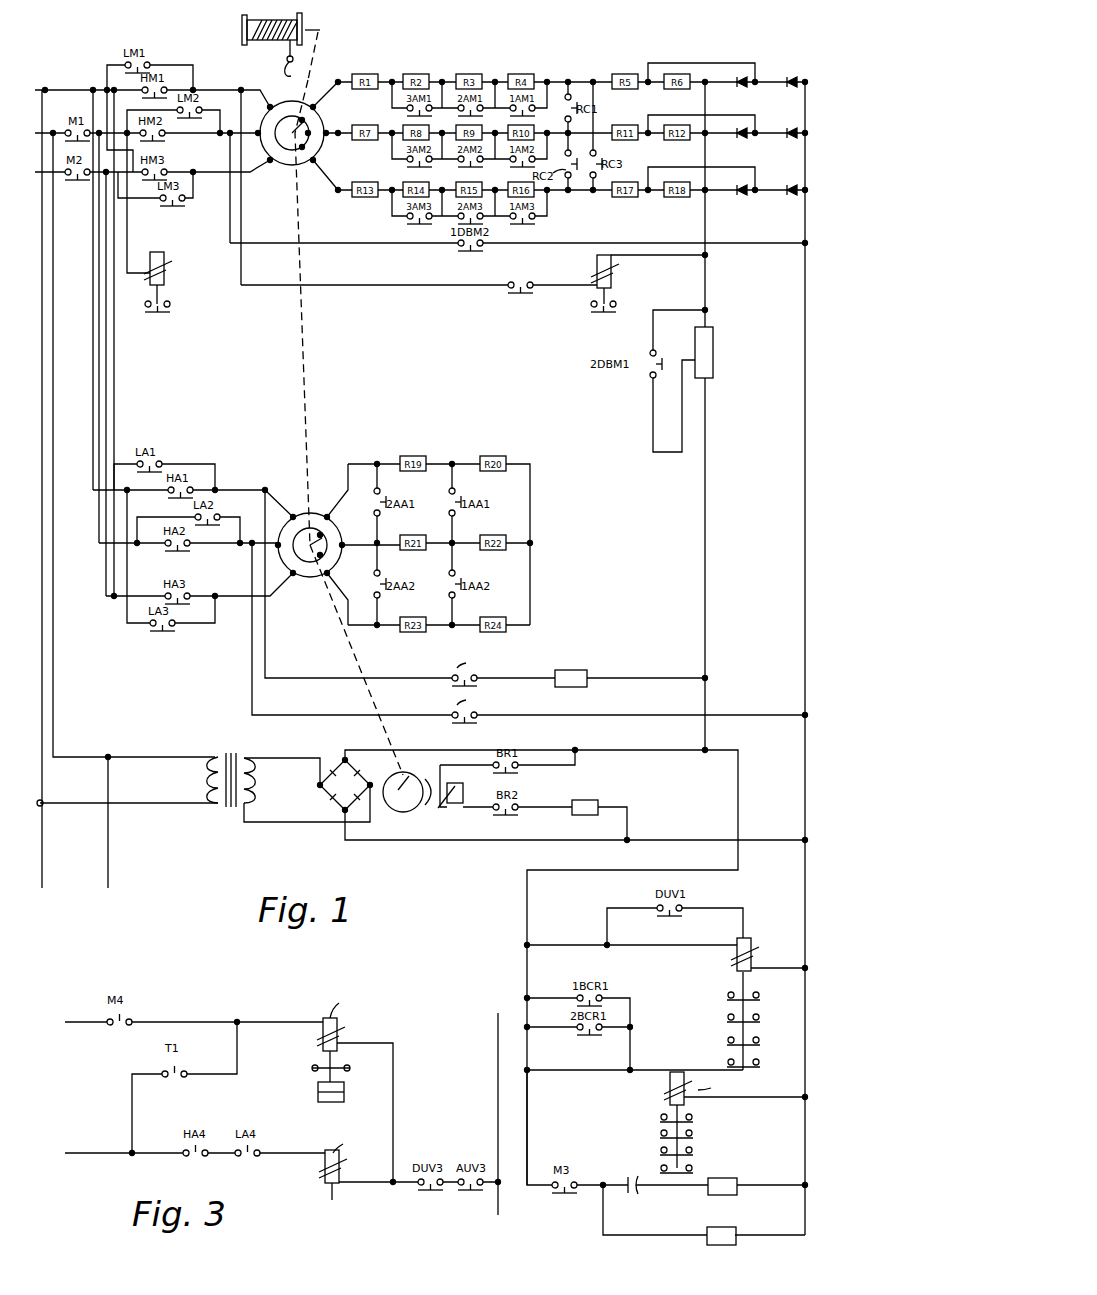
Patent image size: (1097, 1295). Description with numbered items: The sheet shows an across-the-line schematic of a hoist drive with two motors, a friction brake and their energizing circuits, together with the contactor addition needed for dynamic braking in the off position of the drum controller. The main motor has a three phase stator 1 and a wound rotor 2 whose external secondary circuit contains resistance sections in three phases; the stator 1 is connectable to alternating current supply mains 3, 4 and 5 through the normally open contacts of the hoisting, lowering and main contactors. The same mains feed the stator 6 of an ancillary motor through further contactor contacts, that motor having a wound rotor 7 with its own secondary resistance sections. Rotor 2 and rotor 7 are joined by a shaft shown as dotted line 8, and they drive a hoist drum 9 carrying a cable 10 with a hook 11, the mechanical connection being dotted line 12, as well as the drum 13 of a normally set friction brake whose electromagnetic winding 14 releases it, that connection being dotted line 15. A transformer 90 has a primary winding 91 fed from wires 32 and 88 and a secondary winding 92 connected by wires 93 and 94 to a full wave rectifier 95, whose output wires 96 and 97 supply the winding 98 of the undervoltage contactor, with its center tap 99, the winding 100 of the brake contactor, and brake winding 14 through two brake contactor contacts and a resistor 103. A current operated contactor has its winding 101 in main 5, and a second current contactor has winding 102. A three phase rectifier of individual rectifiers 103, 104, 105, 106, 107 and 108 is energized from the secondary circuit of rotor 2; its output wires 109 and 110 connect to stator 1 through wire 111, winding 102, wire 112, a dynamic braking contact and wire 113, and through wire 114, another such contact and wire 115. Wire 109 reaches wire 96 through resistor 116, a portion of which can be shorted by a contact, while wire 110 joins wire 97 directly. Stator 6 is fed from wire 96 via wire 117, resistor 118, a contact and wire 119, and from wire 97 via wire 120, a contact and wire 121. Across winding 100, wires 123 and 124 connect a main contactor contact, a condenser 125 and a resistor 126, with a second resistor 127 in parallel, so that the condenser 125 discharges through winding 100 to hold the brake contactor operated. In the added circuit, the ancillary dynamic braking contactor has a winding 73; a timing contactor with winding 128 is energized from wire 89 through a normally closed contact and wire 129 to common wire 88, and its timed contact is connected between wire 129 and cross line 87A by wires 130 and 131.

In FIG. 1, the three phase stator 1 is at (275, 165).
In FIG. 1, the wound rotor 2 is at (308, 122).
In FIG. 1, the alternating current supply main 3 is at (64, 92).
In FIG. 1, the alternating current supply main 4 is at (45, 136).
In FIG. 1, the alternating current supply main 5 is at (68, 180).
In FIG. 1, the stator of ancillary motor 6 is at (298, 514).
In FIG. 1, the wound rotor 7 is at (328, 536).
In FIG. 1, the shaft 8 is at (303, 350).
In FIG. 1, the hoist drum 9 is at (302, 16).
In FIG. 1, the cable 10 is at (272, 20).
In FIG. 1, the hook 11 is at (288, 66).
In FIG. 1, the dotted line 12 is at (314, 58).
In FIG. 1, the drum 13 is at (399, 814).
In FIG. 1, the electromagnetic winding 14 is at (456, 777).
In FIG. 1, the dotted line 15 is at (355, 648).
In FIG. 1, the wire 32 is at (42, 686).
In FIG. 1, the common wire 88 is at (53, 708).
In FIG. 3, the common wire 88 is at (498, 1125).
In FIG. 1, the transformer 90 is at (212, 756).
In FIG. 1, the primary winding 91 is at (206, 783).
In FIG. 1, the secondary winding 92 is at (252, 784).
In FIG. 1, the wire 93 is at (280, 757).
In FIG. 1, the wire 94 is at (270, 822).
In FIG. 1, the full wave rectifier 95 is at (345, 785).
In FIG. 1, the wire 96 is at (705, 608).
In FIG. 1, the wire 97 is at (445, 842).
In FIG. 1, the winding 98 is at (756, 955).
In FIG. 1, the center tap 99 is at (737, 952).
In FIG. 1, the winding 100 is at (668, 1088).
In FIG. 1, the winding 101 is at (172, 276).
In FIG. 1, the winding 102 is at (612, 277).
In FIG. 1, the resistor / rectifier 103 is at (745, 88).
In FIG. 1, the rectifier 104 is at (795, 88).
In FIG. 1, the rectifier 105 is at (745, 139).
In FIG. 1, the rectifier 106 is at (795, 139).
In FIG. 1, the rectifier 107 is at (745, 196).
In FIG. 1, the rectifier 108 is at (795, 196).
In FIG. 1, the wire 109 is at (705, 225).
In FIG. 1, the wire 110 is at (805, 228).
In FIG. 1, the wire 111 is at (673, 258).
In FIG. 1, the wire 112 is at (574, 284).
In FIG. 1, the wire 113 is at (320, 284).
In FIG. 1, the wire 114 is at (577, 247).
In FIG. 1, the wire 115 is at (331, 243).
In FIG. 1, the resistor 116 is at (713, 355).
In FIG. 1, the wire 117 is at (603, 679).
In FIG. 1, the resistor 118 is at (556, 671).
In FIG. 1, the wire 119 is at (294, 676).
In FIG. 1, the wire 120 is at (547, 715).
In FIG. 1, the wire 121 is at (278, 714).
In FIG. 1, the wire 123 is at (527, 1107).
In FIG. 1, the wire 124 is at (805, 1153).
In FIG. 1, the condenser 125 is at (632, 1196).
In FIG. 1, the resistor 126 is at (718, 1196).
In FIG. 1, the second resistor 127 is at (706, 1228).
In FIG. 3, the winding 73 is at (322, 1172).
In FIG. 3, the cross line 87A is at (86, 1154).
In FIG. 3, the wire 89 is at (84, 1022).
In FIG. 3, the winding 128 is at (340, 1033).
In FIG. 3, the wire 129 is at (186, 1022).
In FIG. 3, the wire 130 is at (237, 1048).
In FIG. 3, the wire 131 is at (132, 1108).